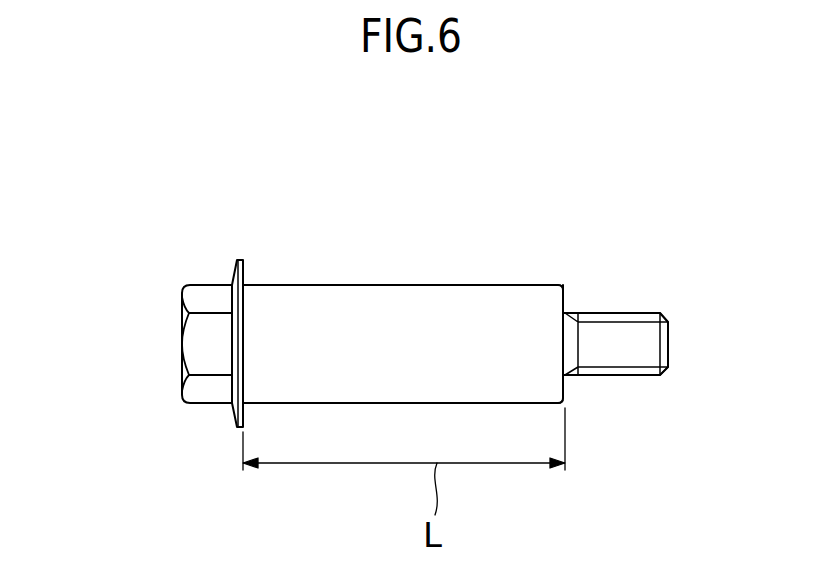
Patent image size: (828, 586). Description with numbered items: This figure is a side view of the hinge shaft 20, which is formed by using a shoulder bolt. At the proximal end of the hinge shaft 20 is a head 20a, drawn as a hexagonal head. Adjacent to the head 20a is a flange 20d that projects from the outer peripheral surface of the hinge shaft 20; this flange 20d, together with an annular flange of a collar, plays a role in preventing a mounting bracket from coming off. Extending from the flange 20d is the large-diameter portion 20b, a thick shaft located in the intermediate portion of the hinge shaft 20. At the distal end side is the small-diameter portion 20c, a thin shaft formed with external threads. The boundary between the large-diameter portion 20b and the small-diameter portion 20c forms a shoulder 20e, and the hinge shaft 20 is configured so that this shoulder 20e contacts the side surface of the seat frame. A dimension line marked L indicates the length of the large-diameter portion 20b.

The hinge shaft 20 is at (371, 293).
The head 20a is at (212, 347).
The large-diameter portion 20b is at (342, 303).
The small-diameter portion 20c is at (623, 355).
The flange 20d is at (240, 258).
The shoulder 20e is at (567, 290).